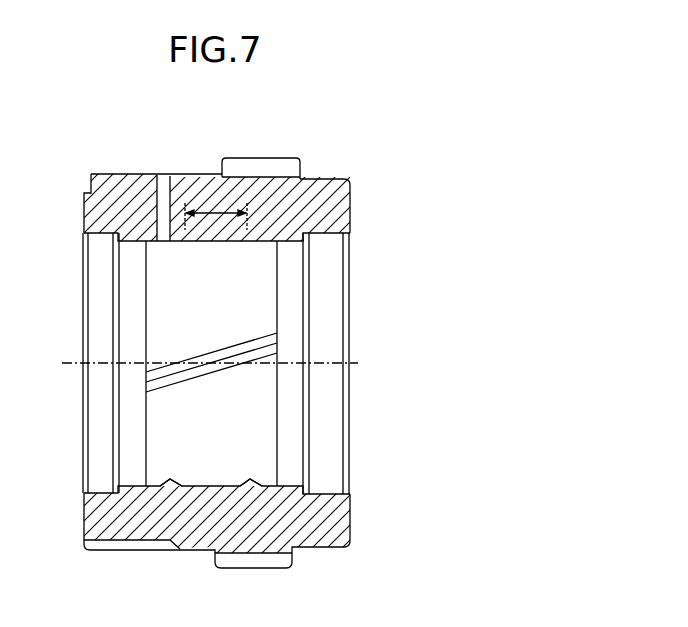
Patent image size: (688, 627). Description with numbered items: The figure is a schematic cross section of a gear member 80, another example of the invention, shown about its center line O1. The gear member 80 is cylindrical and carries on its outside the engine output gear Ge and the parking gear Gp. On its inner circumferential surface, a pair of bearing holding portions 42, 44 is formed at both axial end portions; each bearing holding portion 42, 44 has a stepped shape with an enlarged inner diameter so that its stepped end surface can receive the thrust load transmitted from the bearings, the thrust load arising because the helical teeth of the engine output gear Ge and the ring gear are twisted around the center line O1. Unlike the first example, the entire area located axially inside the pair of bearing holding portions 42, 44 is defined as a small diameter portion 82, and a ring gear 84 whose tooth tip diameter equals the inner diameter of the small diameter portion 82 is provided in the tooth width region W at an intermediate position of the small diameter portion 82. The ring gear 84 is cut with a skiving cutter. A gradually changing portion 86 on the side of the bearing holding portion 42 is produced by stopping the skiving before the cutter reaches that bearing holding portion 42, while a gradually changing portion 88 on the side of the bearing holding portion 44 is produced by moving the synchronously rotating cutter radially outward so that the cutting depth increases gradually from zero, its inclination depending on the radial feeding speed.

The gear member 80 is at (350, 154).
The engine output gear Ge is at (247, 168).
The tooth width region W is at (216, 211).
The bearing holding portion 42 is at (103, 248).
The bearing holding portion 44 is at (330, 250).
The center line O1 is at (198, 363).
The ring gear 84 is at (132, 405).
The small diameter portion 82 is at (284, 476).
The gradually changing portion 86 is at (182, 490).
The gradually changing portion 88 is at (244, 487).
The parking gear Gp is at (117, 549).